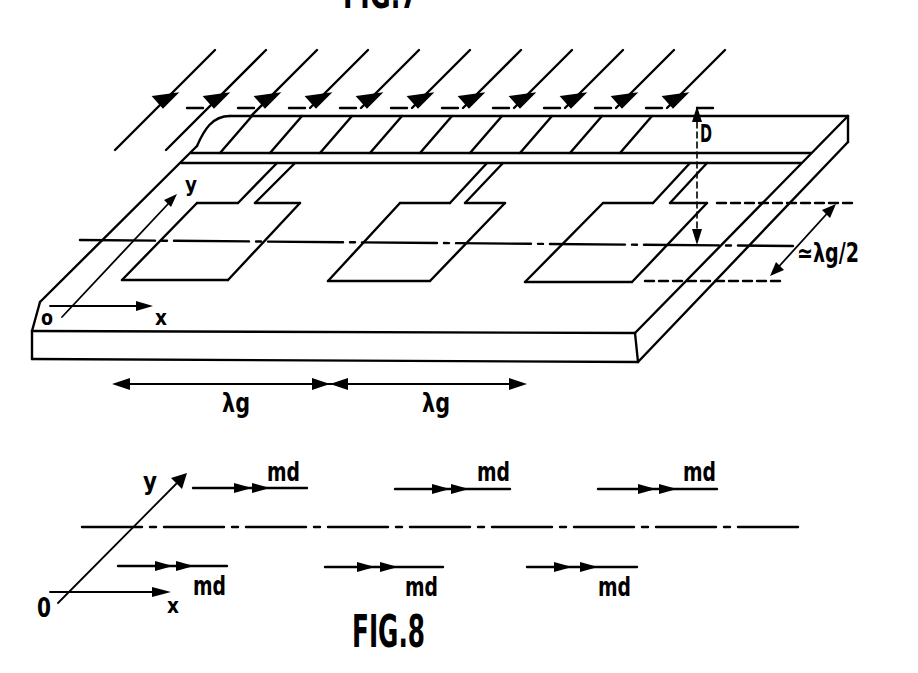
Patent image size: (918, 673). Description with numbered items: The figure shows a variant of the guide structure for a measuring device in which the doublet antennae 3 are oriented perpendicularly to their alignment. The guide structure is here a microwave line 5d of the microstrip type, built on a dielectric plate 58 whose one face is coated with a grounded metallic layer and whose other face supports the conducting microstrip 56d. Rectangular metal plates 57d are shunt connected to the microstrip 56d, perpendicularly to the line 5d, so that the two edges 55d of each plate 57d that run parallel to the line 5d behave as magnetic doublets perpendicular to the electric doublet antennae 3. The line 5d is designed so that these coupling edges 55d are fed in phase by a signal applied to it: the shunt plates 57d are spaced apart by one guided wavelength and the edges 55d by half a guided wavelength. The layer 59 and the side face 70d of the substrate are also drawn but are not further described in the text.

The doublet antennae 3 is at (588, 70).
The microwave line 5d is at (168, 158).
The edges 55d is at (274, 200).
The microstrip 56d is at (200, 144).
The rectangular metal plates 57d is at (190, 236).
The dielectric plate 58 is at (52, 340).
The electro-optic layer 59 is at (102, 357).
The side face of substrate 70d is at (772, 240).